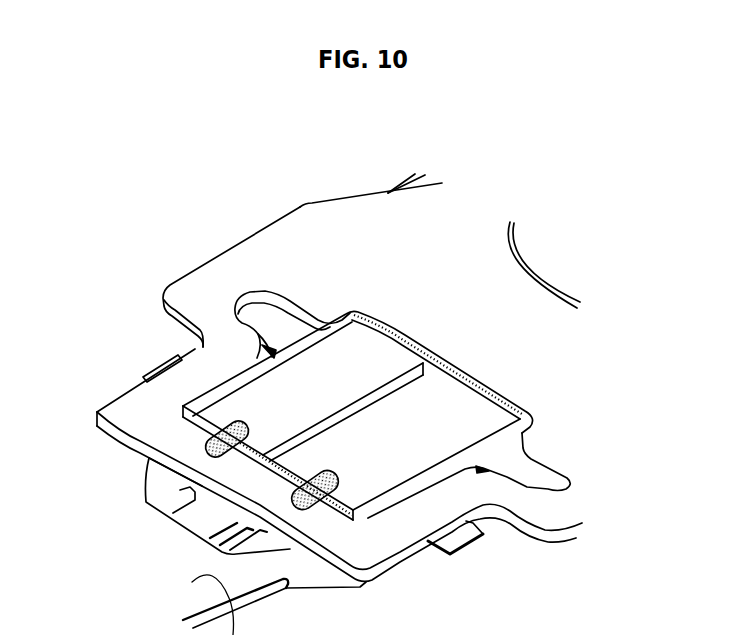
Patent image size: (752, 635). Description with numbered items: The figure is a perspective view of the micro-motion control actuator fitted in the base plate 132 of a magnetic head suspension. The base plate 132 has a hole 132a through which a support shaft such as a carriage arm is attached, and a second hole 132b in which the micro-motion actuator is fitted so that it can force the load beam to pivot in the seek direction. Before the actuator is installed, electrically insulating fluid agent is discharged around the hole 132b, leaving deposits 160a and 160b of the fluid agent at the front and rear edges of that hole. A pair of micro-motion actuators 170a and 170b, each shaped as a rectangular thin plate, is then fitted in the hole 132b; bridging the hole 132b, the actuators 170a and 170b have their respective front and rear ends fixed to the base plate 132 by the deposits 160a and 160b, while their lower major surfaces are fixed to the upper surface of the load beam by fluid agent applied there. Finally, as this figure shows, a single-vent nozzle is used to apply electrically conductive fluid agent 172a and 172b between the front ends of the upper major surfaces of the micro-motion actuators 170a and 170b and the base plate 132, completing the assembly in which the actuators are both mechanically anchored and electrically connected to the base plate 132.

The base plate 132 is at (362, 228).
The hole 132a is at (530, 278).
The hole 132b is at (428, 467).
The deposit of the fluid agent 160a is at (218, 423).
The deposit of the fluid agent 160b is at (390, 327).
The micro-motion actuator 170a is at (242, 405).
The micro-motion actuator 170b is at (362, 467).
The electrically conductive fluid agent 172a is at (213, 450).
The electrically conductive fluid agent 172b is at (293, 490).